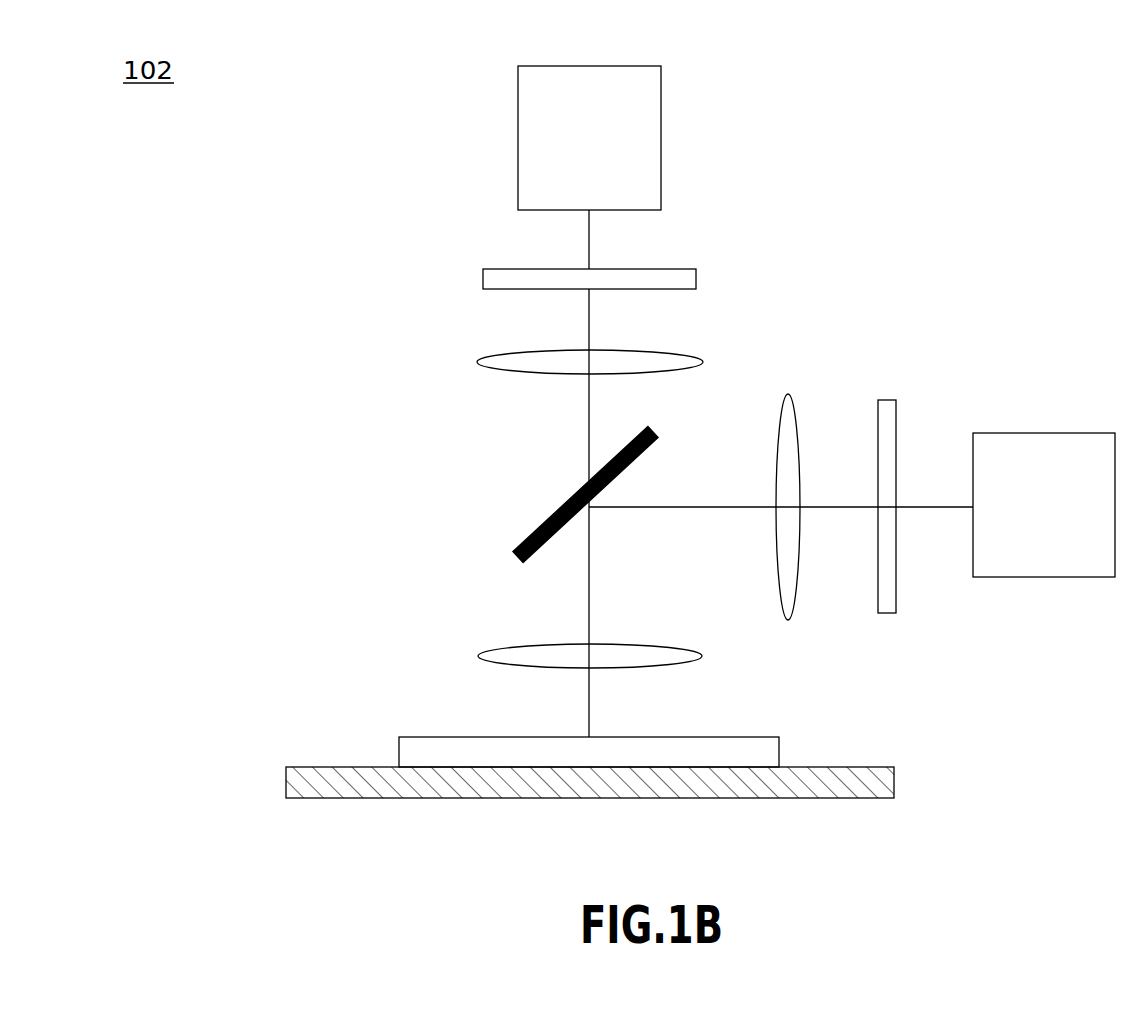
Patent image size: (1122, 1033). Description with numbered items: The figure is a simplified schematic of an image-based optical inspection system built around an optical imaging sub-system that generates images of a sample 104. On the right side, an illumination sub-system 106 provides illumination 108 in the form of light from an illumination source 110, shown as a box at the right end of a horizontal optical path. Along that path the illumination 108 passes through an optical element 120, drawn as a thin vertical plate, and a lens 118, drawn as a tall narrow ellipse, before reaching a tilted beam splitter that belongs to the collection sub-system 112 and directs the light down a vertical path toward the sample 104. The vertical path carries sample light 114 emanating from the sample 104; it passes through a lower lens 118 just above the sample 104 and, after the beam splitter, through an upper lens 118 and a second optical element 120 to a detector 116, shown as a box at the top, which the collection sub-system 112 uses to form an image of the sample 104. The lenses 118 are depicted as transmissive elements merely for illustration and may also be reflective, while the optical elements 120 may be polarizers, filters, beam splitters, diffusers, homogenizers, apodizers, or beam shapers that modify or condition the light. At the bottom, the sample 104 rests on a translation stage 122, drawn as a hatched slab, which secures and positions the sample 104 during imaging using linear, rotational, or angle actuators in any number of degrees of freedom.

The sample 104 is at (398, 749).
The illumination sub-system 106 is at (933, 332).
The illumination 108 is at (651, 507).
The illumination source 110 is at (1064, 517).
The collection sub-system 112 is at (428, 479).
The sample light 114 is at (588, 425).
The detector 116 is at (607, 156).
The lenses 118 is at (478, 360).
The optical elements 120 is at (483, 279).
The translation stage 122 is at (286, 782).